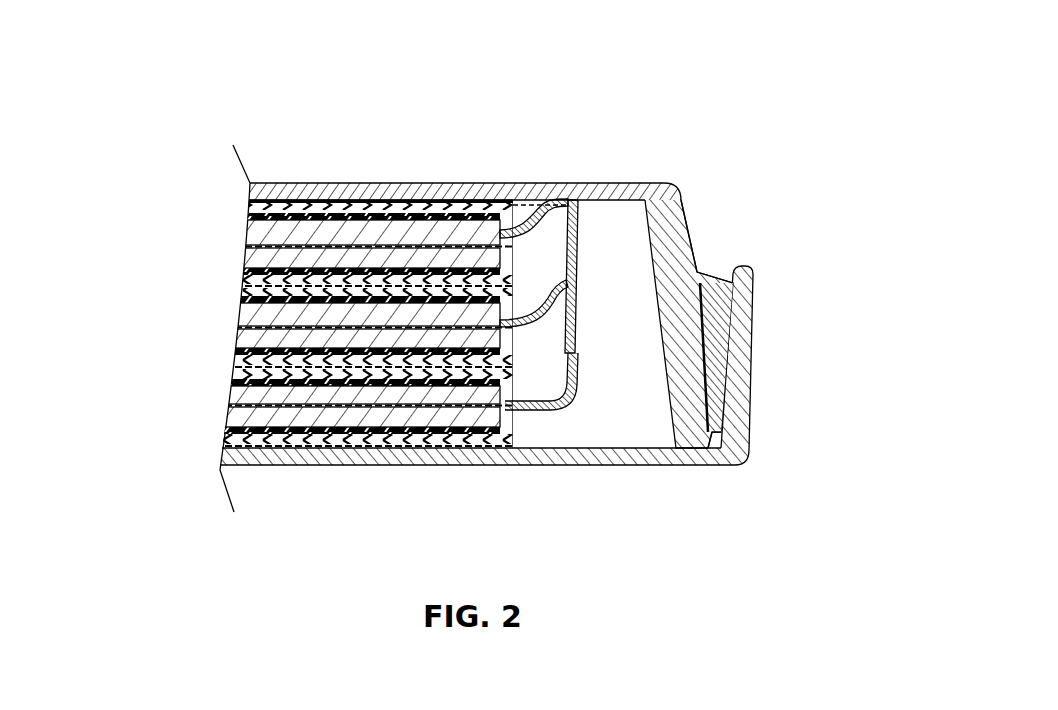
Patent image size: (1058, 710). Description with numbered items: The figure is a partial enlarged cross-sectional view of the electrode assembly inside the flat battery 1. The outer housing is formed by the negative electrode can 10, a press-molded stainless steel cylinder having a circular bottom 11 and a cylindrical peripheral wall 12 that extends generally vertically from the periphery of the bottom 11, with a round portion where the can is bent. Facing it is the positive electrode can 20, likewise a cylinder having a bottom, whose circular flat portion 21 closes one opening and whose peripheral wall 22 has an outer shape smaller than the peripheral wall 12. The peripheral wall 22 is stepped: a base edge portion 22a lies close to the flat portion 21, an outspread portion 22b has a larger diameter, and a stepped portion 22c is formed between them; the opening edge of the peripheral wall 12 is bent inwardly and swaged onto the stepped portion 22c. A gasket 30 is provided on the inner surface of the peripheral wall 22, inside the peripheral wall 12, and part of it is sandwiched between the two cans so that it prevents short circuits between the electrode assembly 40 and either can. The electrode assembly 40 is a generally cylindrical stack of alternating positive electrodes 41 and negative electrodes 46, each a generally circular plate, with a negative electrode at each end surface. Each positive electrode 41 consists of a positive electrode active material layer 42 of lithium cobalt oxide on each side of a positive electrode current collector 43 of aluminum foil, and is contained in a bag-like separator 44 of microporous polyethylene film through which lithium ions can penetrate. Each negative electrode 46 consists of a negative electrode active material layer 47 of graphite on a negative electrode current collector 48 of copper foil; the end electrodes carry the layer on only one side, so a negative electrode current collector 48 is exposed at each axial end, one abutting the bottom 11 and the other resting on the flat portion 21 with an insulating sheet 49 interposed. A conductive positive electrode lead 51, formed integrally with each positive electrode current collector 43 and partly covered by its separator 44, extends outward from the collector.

The battery 1 is at (441, 308).
The negative electrode can 10 is at (520, 411).
The bottom 11 is at (700, 463).
The peripheral wall 12 is at (747, 348).
The positive electrode can 20 is at (533, 272).
The flat portion 21 is at (386, 183).
The peripheral wall 22 is at (731, 288).
The base edge portion 22a is at (683, 215).
The outspread portion 22b is at (740, 332).
The stepped portion 22c is at (701, 278).
The gasket 30 is at (741, 442).
The electrode assembly 40 is at (430, 324).
The positive electrode 41 is at (364, 323).
The positive electrode active material layer 42 is at (357, 417).
The positive electrode current collector 43 is at (357, 395).
The separator 44 is at (357, 323).
The negative electrode 46 is at (364, 360).
The negative electrode active material layer 47 is at (364, 374).
The negative electrode current collector 48 is at (364, 292).
The insulating sheet 49 is at (300, 200).
The positive electrode lead 51 is at (578, 300).